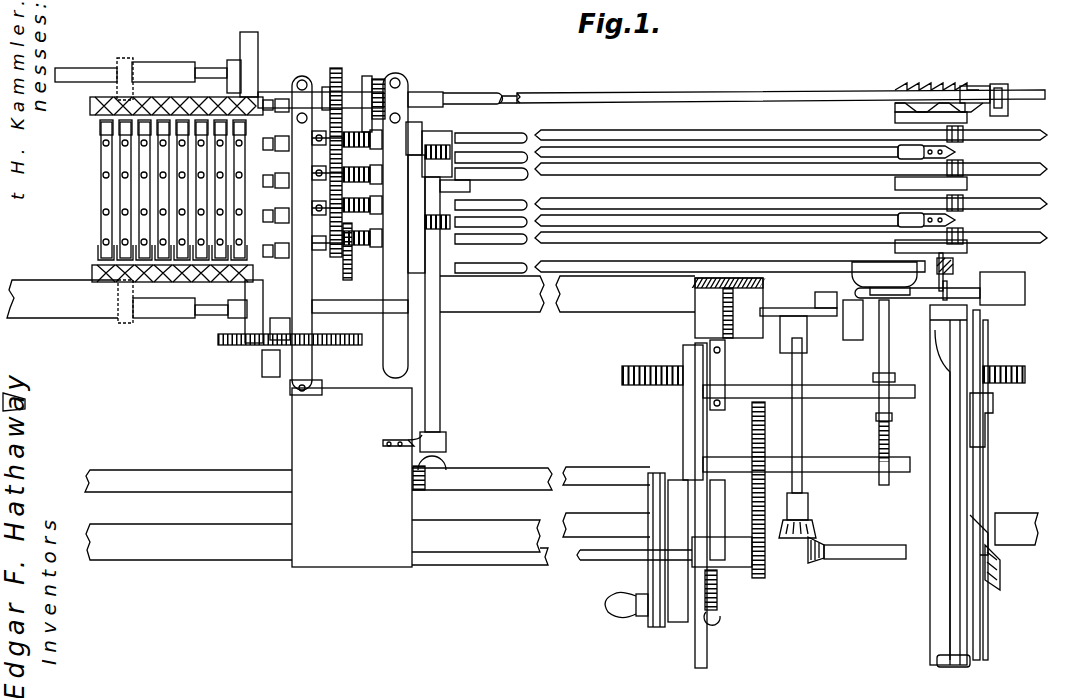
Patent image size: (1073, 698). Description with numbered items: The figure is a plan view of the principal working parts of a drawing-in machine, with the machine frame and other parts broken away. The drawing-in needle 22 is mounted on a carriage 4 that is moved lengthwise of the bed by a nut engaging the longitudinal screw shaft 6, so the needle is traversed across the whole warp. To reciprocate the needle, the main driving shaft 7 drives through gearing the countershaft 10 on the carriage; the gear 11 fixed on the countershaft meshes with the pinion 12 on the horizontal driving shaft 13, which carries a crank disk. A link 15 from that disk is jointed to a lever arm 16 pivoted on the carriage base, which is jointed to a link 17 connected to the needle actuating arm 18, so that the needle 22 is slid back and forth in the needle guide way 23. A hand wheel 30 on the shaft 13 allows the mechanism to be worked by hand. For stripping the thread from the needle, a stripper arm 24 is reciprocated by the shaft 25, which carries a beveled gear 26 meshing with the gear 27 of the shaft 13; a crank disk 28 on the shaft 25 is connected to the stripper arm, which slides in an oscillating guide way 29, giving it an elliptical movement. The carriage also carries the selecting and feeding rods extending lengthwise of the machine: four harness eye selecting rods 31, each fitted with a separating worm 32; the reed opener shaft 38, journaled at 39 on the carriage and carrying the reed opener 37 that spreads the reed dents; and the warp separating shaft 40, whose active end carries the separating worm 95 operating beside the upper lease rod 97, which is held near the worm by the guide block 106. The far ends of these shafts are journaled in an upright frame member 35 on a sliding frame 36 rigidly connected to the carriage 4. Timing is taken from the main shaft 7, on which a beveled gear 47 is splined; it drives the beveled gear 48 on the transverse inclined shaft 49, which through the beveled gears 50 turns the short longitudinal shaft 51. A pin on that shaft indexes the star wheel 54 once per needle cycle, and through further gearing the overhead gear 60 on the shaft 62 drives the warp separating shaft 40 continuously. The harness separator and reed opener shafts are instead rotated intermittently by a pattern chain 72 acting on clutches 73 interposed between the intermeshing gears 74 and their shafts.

The carriage 4 is at (940, 358).
The longitudinal screw shaft 6 is at (655, 383).
The main driving shaft 7 is at (240, 472).
The countershaft 10 is at (832, 459).
The gear 11 is at (759, 426).
The pinion 12 is at (760, 580).
The horizontal driving shaft 13 is at (844, 560).
The link 15 is at (986, 494).
The lever arm 16 is at (984, 430).
The link 17 is at (987, 476).
The needle actuating arm 18 is at (990, 568).
The drawing-in needle 22 is at (980, 298).
The needle guide way 23 is at (946, 599).
The stripper arm 24 is at (1002, 288).
The shaft 25 is at (804, 380).
The beveled gear 26 is at (812, 536).
The gear 27 is at (820, 564).
The crank disk 28 is at (771, 322).
The oscillating guide way 29 is at (834, 294).
The hand wheel 30 is at (648, 576).
The harness eye selecting rods 31 is at (762, 134).
The worm 32 is at (963, 142).
The upright frame member 35 is at (386, 353).
The sliding frame 36 is at (336, 510).
The reed opener 37 is at (954, 264).
The reed opener shaft 38 is at (565, 267).
The journal 39 is at (852, 265).
The warp separating shaft 40 is at (524, 96).
The beveled gear 47 is at (428, 488).
The beveled gear 48 is at (448, 466).
The transverse inclined shaft 49 is at (441, 371).
The beveled gears 50 is at (440, 130).
The short longitudinal shaft 51 is at (414, 123).
The star wheel 54 is at (367, 75).
The overhead gear 60 is at (381, 82).
The shaft 62 is at (336, 92).
The pattern chain 72 is at (100, 202).
The clutches 73 is at (342, 193).
The intermeshing gears 74 is at (342, 156).
The separating device 95 is at (920, 88).
The upper lease rod 97 is at (662, 96).
The guide block 106 is at (1000, 84).